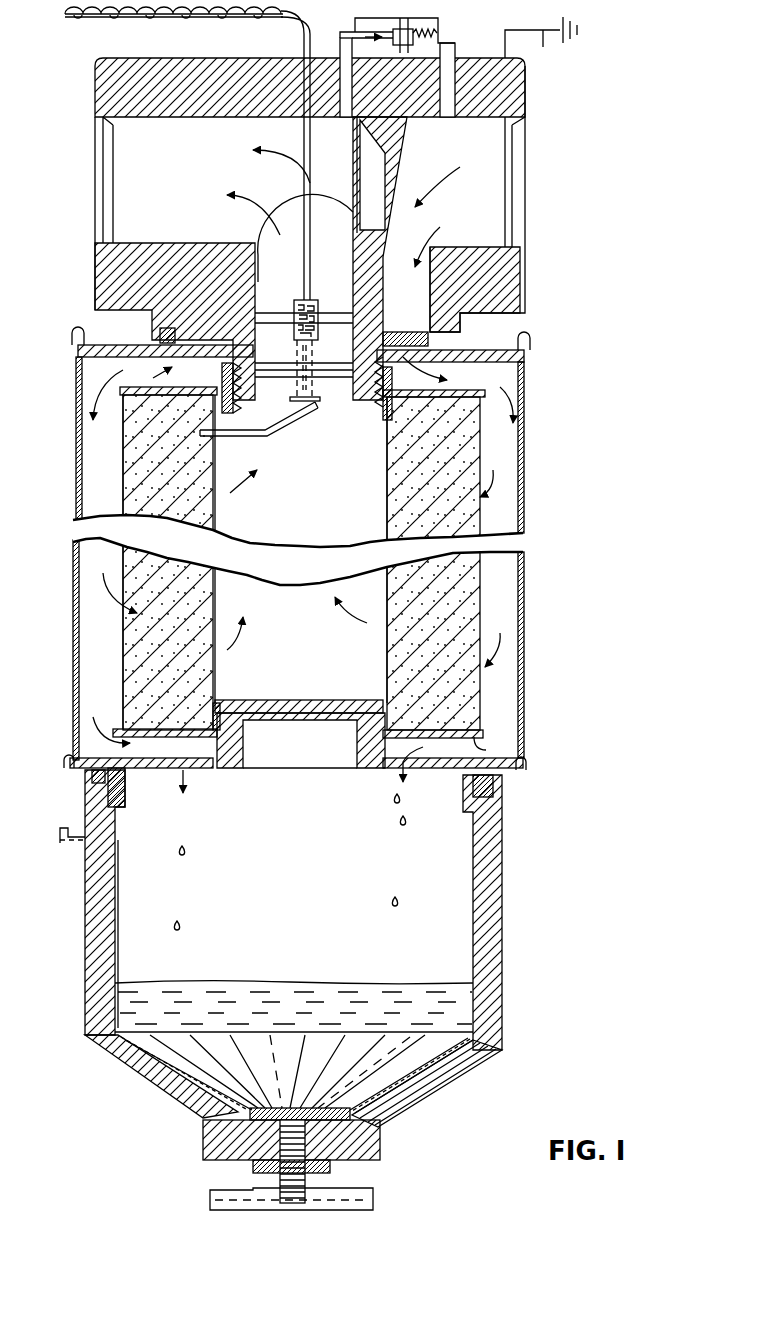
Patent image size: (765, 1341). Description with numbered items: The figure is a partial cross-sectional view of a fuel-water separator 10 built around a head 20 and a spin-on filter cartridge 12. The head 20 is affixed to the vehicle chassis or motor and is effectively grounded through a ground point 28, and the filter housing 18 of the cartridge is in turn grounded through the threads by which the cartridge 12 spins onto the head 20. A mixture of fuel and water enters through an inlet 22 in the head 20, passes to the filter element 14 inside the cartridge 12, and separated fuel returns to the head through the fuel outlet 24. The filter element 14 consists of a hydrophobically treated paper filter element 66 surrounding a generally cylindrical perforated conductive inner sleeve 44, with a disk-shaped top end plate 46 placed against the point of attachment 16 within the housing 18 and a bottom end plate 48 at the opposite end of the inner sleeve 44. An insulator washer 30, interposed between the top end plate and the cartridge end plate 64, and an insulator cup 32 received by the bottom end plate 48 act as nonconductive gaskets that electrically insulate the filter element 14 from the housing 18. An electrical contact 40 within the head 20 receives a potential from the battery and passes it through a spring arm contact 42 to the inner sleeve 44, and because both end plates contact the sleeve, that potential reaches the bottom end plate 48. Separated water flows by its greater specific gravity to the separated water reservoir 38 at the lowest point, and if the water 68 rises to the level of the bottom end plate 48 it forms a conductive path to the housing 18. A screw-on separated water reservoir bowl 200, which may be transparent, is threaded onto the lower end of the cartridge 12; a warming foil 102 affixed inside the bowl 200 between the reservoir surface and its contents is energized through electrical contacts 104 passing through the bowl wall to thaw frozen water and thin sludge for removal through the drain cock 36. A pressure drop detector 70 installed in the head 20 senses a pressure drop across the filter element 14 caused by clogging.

The fuel-water separator 10 is at (76, 381).
The spin-on filter cartridge 12 is at (74, 588).
The filter element 14 is at (122, 628).
The point of attachment 16 is at (377, 403).
The filter housing 18 is at (528, 362).
The head 20 is at (94, 77).
The inlet 22 is at (523, 181).
The fuel outlet 24 is at (95, 205).
The ground point 28 is at (541, 49).
The insulator washer 30 is at (382, 420).
The insulator cup 32 is at (310, 718).
The drain cock 36 is at (372, 1193).
The separated water reservoir 38 is at (307, 917).
The electrical contact 40 is at (320, 350).
The spring arm contact 42 is at (291, 422).
The inner sleeve 44 is at (215, 513).
The top end plate 46 is at (453, 396).
The bottom end plate 48 is at (478, 745).
The cartridge end plate 64 is at (508, 362).
The paper filter element 66 is at (123, 490).
The water 68 is at (347, 1000).
The pressure drop detector 70 is at (420, 17).
The warming foil 102 is at (190, 1082).
The electrical contacts 104 is at (75, 843).
The separated water reservoir bowl 200 is at (87, 1047).